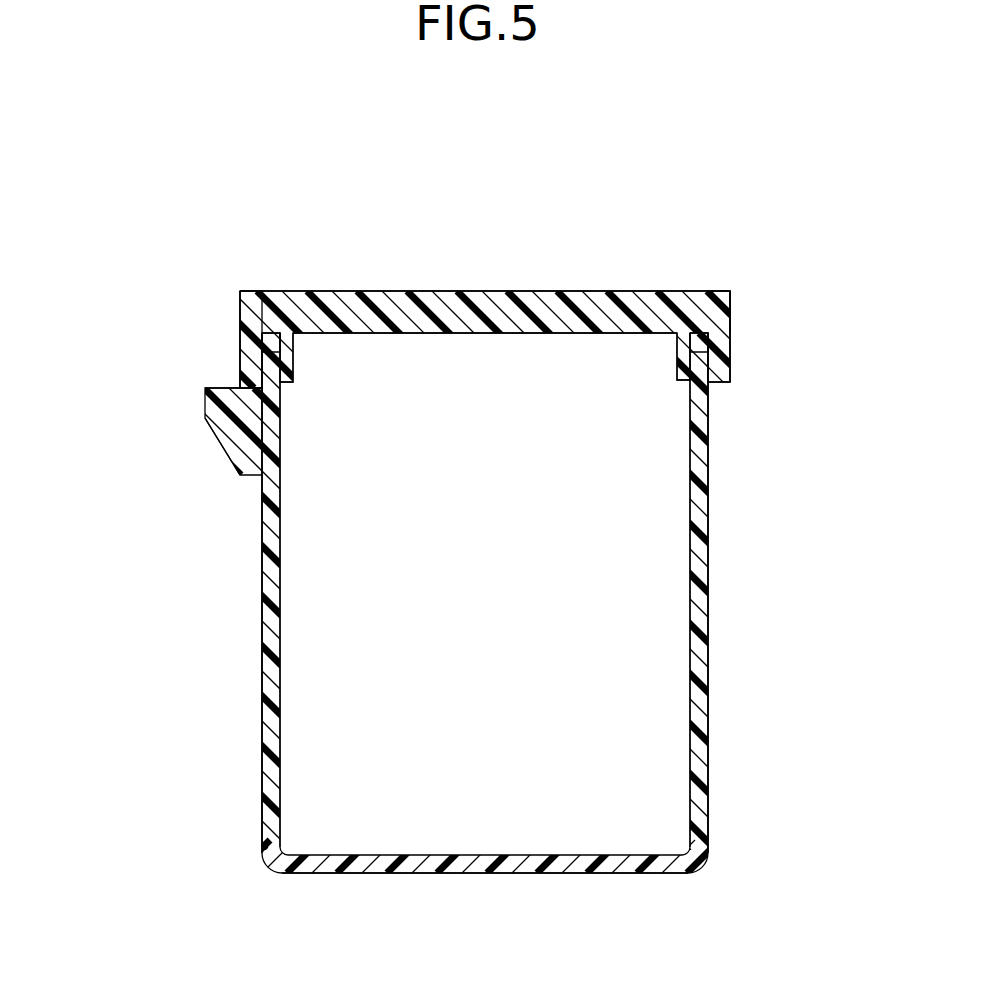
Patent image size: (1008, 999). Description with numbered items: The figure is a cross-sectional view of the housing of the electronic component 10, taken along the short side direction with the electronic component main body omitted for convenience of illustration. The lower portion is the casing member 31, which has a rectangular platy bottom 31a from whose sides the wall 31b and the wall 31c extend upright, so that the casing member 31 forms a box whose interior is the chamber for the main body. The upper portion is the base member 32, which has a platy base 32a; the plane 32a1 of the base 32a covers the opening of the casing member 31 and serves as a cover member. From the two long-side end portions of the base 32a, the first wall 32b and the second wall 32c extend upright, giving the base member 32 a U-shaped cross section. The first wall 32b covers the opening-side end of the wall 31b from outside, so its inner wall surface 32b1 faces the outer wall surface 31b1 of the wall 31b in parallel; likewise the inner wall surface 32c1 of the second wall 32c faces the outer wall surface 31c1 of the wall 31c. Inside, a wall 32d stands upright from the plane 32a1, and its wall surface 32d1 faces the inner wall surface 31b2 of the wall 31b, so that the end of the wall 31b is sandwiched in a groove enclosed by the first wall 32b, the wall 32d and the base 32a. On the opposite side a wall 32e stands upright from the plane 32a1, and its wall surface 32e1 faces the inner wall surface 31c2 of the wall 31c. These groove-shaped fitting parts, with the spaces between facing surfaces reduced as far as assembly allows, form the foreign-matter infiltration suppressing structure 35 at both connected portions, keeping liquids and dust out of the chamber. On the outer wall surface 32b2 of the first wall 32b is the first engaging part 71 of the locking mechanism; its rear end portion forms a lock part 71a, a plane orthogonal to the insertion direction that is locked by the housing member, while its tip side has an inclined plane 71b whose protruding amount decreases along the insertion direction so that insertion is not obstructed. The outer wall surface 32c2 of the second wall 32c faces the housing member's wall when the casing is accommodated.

The electronic component 10 is at (608, 163).
The casing member 31 is at (710, 562).
The bottom 31a is at (484, 874).
The wall 31b is at (262, 542).
The outer wall surface 31b1 is at (262, 508).
The inner wall surface 31b2 is at (282, 430).
The wall 31c is at (708, 485).
The outer wall surface 31c1 is at (708, 418).
The inner wall surface 31c2 is at (690, 430).
The base member 32 is at (480, 291).
The base 32a is at (435, 291).
The plane 32a1 is at (468, 334).
The first wall 32b is at (262, 353).
The inner wall surface 32b1 is at (282, 347).
The outer wall surface 32b2 is at (262, 345).
The second wall 32c is at (714, 367).
The inner wall surface 32c1 is at (686, 348).
The wall surface 32c2 is at (716, 355).
The wall 32d is at (292, 291).
The wall surface 32d1 is at (240, 304).
The wall 32e is at (705, 300).
The wall surface 32e1 is at (730, 326).
The foreign-matter infiltration suppressing structure 35 is at (213, 282).
The first engaging part 71 is at (83, 385).
The lock part 71a is at (208, 380).
The inclined plane 71b is at (222, 448).